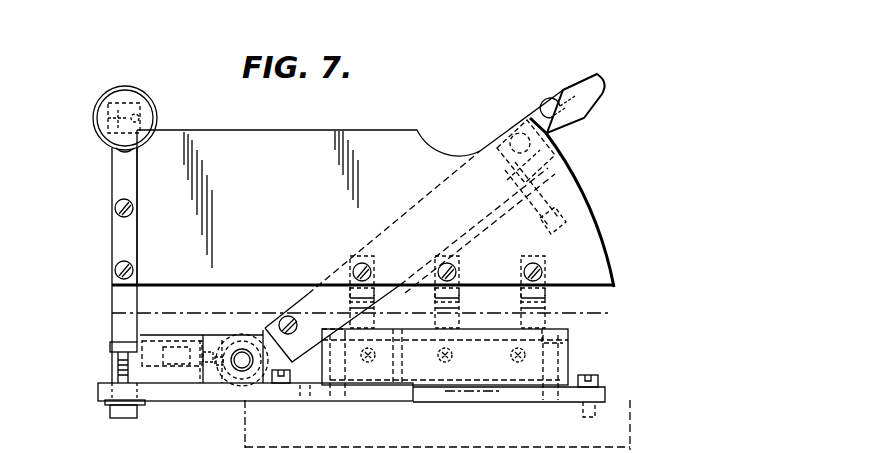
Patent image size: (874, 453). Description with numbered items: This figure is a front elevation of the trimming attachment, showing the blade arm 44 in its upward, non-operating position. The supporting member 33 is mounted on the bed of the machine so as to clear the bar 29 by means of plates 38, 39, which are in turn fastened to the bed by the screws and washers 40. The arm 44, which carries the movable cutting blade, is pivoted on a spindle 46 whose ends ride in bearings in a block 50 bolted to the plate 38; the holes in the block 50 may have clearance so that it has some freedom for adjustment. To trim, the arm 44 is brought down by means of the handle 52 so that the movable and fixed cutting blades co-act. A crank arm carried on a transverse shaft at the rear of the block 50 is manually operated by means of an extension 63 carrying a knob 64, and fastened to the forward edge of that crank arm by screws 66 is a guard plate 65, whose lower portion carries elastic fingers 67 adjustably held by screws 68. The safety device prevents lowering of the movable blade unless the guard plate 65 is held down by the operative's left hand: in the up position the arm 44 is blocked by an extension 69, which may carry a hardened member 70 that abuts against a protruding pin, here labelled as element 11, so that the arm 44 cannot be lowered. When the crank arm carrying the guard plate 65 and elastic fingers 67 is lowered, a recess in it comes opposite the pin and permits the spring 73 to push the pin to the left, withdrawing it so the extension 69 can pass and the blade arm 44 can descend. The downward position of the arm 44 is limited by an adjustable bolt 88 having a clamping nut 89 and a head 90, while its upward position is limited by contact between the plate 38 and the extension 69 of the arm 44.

The guide member 11 is at (224, 345).
The bar 29 is at (478, 408).
The supporting member 33 is at (570, 355).
The plate 38 is at (316, 395).
The plate 39 is at (606, 396).
The screws and washers 40 is at (281, 388).
The arm 44 is at (516, 135).
The spindle 46 is at (244, 352).
The block 50 is at (160, 387).
The handle 52 is at (588, 84).
The extension 63 is at (110, 112).
The knob 64 is at (125, 95).
The guard plate 65 is at (615, 284).
The screws 66 is at (115, 208).
The elastic fingers 67 is at (374, 300).
The screws 68 is at (356, 267).
The extension 69 is at (205, 390).
The hardened member 70 is at (212, 365).
The spring 73 is at (162, 345).
The adjustable bolt 88 is at (545, 195).
The clamping nut 89 is at (540, 168).
The head 90 is at (566, 222).